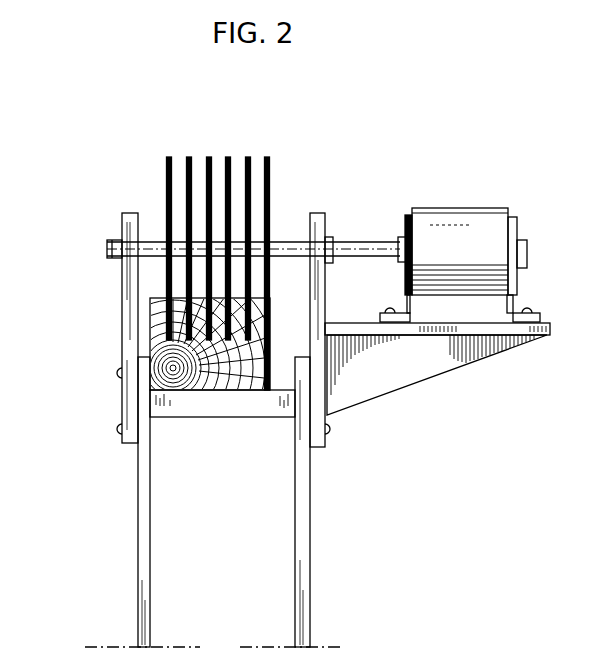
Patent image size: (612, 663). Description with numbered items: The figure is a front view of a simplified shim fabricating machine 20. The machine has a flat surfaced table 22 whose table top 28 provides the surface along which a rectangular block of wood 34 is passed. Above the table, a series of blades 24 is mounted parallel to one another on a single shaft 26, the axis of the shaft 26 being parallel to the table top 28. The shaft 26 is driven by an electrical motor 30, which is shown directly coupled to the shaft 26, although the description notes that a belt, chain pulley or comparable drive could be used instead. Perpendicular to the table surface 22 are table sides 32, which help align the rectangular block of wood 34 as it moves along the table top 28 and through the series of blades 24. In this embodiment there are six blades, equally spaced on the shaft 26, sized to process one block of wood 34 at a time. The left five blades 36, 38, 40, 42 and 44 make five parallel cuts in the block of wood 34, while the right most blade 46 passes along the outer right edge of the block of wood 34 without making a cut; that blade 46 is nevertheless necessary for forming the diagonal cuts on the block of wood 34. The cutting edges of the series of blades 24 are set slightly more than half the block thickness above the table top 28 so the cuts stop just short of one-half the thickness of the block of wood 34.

The shim fabricating machine 20 is at (46, 376).
The flat surfaced table 22 is at (183, 393).
The series of blades 24 is at (217, 229).
The shaft 26 is at (107, 250).
The table top 28 is at (275, 388).
The motor 30 is at (475, 227).
The table sides 32 is at (294, 380).
The rectangular block of wood 34 is at (227, 390).
The blade 36 is at (168, 168).
The blade 38 is at (187, 160).
The blade 40 is at (218, 160).
The blade 42 is at (238, 160).
The blade 44 is at (253, 160).
The right most blade 46 is at (270, 177).